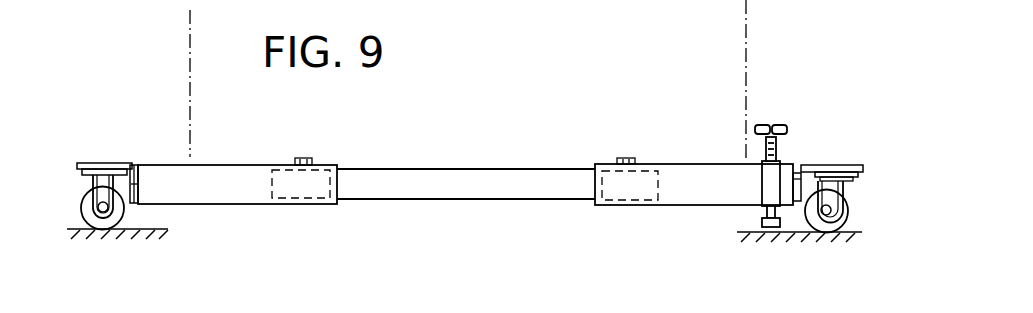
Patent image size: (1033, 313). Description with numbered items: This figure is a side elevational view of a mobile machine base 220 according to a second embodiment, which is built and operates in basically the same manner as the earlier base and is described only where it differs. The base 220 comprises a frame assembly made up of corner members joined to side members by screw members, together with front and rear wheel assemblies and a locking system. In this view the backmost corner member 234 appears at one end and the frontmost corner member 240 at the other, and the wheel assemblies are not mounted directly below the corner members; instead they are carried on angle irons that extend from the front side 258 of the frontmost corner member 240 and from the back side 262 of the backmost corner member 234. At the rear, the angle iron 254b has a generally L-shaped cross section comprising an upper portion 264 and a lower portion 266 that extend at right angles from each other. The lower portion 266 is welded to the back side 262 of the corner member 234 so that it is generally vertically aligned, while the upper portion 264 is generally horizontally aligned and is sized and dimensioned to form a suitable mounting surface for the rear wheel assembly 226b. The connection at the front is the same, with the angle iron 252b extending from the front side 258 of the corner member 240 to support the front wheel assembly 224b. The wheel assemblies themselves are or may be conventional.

The mobile machine base 220 is at (784, 96).
The first corner member 234 is at (250, 196).
The fourth corner member 240 is at (670, 198).
The back side of corner member 262 is at (133, 167).
The lower portion of angle iron 266 is at (138, 192).
The upper portion of angle iron 264 is at (97, 162).
The angle iron 254b is at (118, 152).
The rear wheel assembly 226b is at (73, 218).
The front side of corner member 258 is at (800, 170).
The angle iron 252b is at (813, 150).
The front wheel assembly 224b is at (861, 218).